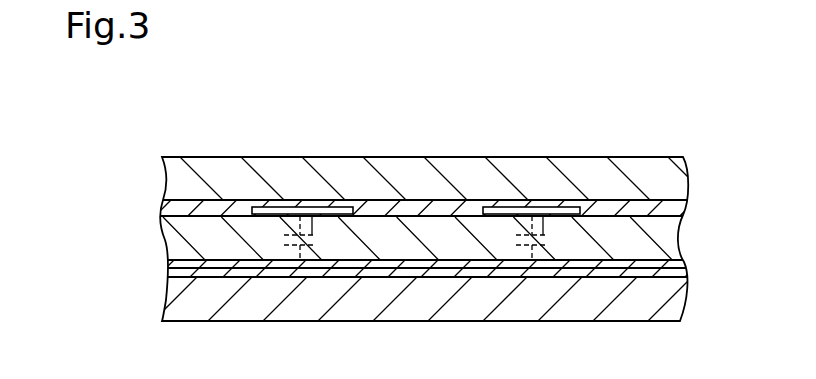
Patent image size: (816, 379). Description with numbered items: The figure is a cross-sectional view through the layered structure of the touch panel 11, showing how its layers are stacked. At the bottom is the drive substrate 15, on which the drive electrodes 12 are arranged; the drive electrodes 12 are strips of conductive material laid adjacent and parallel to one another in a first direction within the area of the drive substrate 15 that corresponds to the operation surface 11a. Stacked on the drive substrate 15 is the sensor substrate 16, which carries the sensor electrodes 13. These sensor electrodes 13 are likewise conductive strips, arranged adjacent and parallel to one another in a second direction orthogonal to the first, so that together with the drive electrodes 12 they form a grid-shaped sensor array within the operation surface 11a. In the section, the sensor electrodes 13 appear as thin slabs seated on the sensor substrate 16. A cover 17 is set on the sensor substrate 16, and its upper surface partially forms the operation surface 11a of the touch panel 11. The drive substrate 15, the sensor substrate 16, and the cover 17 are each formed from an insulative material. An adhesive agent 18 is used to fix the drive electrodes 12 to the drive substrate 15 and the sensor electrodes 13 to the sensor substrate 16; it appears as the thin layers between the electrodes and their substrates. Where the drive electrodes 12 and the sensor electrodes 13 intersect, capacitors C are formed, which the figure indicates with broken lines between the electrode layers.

The touch panel 11 is at (677, 105).
The operation surface 11a is at (660, 157).
The drive electrodes 12 is at (396, 277).
The sensor electrodes 13 is at (292, 209).
The drive substrate 15 is at (172, 288).
The sensor substrate 16 is at (165, 242).
The cover 17 is at (172, 180).
The adhesive agent 18 is at (675, 208).
The capacitors C is at (312, 208).